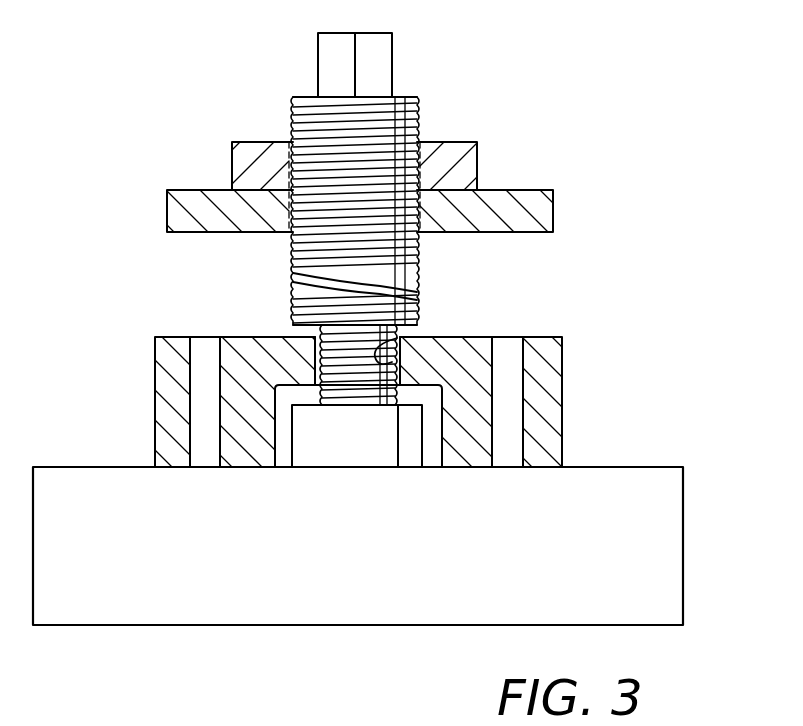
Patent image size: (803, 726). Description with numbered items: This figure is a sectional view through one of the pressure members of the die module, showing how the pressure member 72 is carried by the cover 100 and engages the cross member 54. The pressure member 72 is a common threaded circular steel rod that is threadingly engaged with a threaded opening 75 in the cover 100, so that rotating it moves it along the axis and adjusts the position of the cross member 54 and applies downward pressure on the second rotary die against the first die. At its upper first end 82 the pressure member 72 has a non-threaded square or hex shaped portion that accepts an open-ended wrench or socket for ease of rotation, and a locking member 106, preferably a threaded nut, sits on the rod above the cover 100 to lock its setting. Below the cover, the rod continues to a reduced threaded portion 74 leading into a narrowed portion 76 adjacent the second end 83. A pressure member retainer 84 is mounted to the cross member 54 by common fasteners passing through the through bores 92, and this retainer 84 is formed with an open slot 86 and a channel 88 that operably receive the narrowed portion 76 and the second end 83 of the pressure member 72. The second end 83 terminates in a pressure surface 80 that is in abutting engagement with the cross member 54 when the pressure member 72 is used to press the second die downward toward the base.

The cross member 54 is at (672, 528).
The pressure member 72 is at (413, 100).
The reduced diameter threaded portion 74 is at (412, 318).
The threaded opening 75 is at (415, 207).
The narrowed portion 76 is at (335, 372).
The pressure surface 80 is at (357, 467).
The first end 82 is at (392, 62).
The second end 83 is at (388, 450).
The pressure member retainer 84 is at (563, 392).
The open slot 86 is at (397, 338).
The channel 88 is at (283, 467).
The through bore 92 is at (186, 417).
The cover 100 is at (548, 203).
The locking member 106 is at (233, 142).